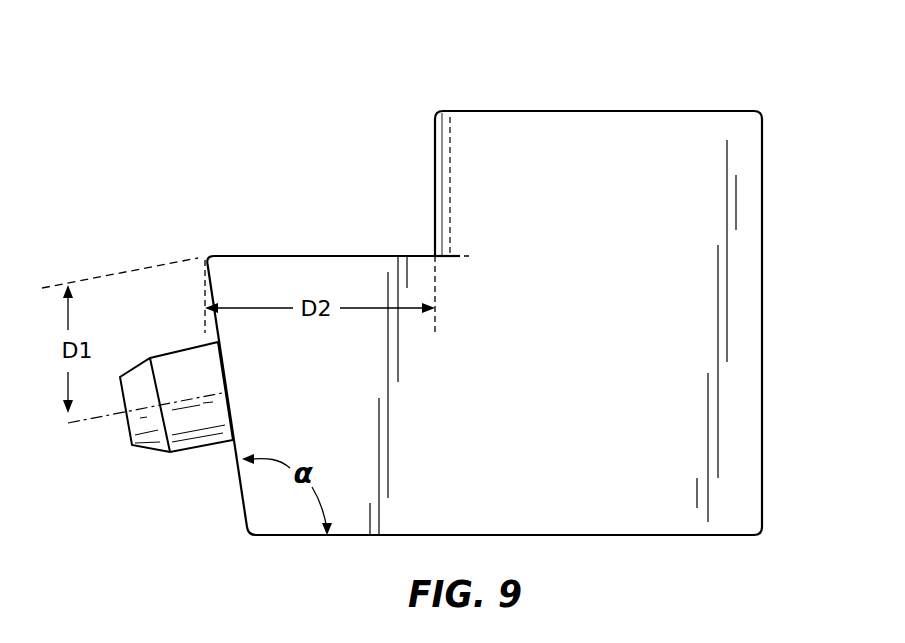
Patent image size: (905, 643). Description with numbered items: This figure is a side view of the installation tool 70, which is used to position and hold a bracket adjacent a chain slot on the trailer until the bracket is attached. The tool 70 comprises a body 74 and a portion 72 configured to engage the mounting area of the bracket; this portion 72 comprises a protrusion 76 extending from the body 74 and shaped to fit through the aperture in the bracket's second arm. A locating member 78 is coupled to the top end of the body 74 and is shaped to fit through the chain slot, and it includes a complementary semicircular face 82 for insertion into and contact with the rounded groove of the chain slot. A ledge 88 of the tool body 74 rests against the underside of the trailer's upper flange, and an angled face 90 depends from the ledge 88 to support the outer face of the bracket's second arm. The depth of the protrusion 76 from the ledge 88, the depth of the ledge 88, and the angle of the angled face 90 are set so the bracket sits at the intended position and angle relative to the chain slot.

The installation tool 70 is at (790, 306).
The portion 72 is at (190, 458).
The body 74 is at (482, 388).
The protrusion 76 is at (177, 368).
The locating member 78 is at (590, 143).
The semicircular face 82 is at (428, 158).
The ledge 88 is at (288, 250).
The angled face 90 is at (238, 492).